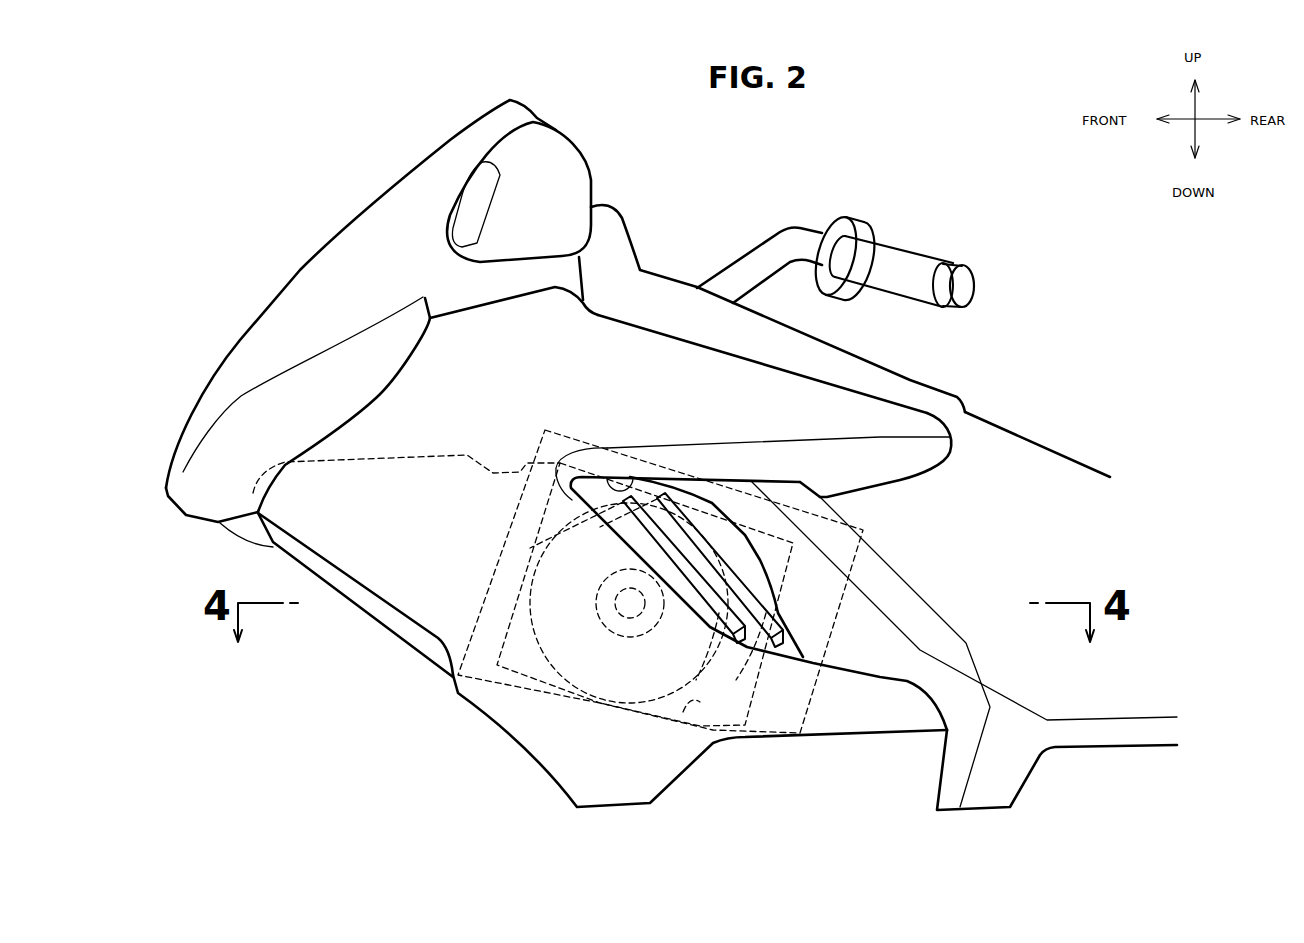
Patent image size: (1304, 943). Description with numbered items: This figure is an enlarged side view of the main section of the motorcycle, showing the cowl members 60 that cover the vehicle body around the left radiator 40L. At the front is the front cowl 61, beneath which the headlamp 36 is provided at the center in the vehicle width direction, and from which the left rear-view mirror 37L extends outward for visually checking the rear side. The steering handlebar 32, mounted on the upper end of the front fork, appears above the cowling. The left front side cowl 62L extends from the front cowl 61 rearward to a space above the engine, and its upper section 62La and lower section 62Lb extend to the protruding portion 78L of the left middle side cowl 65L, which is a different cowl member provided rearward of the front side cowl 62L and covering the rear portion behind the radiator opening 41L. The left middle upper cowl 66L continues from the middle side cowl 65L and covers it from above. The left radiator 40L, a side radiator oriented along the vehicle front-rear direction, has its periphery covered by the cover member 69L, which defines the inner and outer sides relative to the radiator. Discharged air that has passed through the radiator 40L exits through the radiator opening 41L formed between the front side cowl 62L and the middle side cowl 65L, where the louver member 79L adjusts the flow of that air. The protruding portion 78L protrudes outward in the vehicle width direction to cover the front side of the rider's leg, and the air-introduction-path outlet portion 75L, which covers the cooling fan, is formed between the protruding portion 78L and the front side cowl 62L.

The cowl members 60 is at (320, 223).
The front cowl 61 is at (298, 305).
The headlamp 36 is at (247, 408).
The left rear-view mirror 37L is at (553, 172).
The left front side cowl 62L is at (592, 383).
The upper section of left front side cowl 62La is at (935, 428).
The lower section of left front side cowl 62Lb is at (915, 715).
The left middle upper cowl 66L is at (985, 482).
The left protruding portion 78L is at (905, 625).
The left radiator opening 41L is at (607, 478).
The steering handlebar 32 is at (780, 247).
The left cover member 69L is at (385, 612).
The left middle side cowl 65L is at (823, 600).
The left radiator 40L is at (657, 718).
The left air-introduction-path outlet portion 75L is at (688, 702).
The left louver member 79L is at (735, 650).